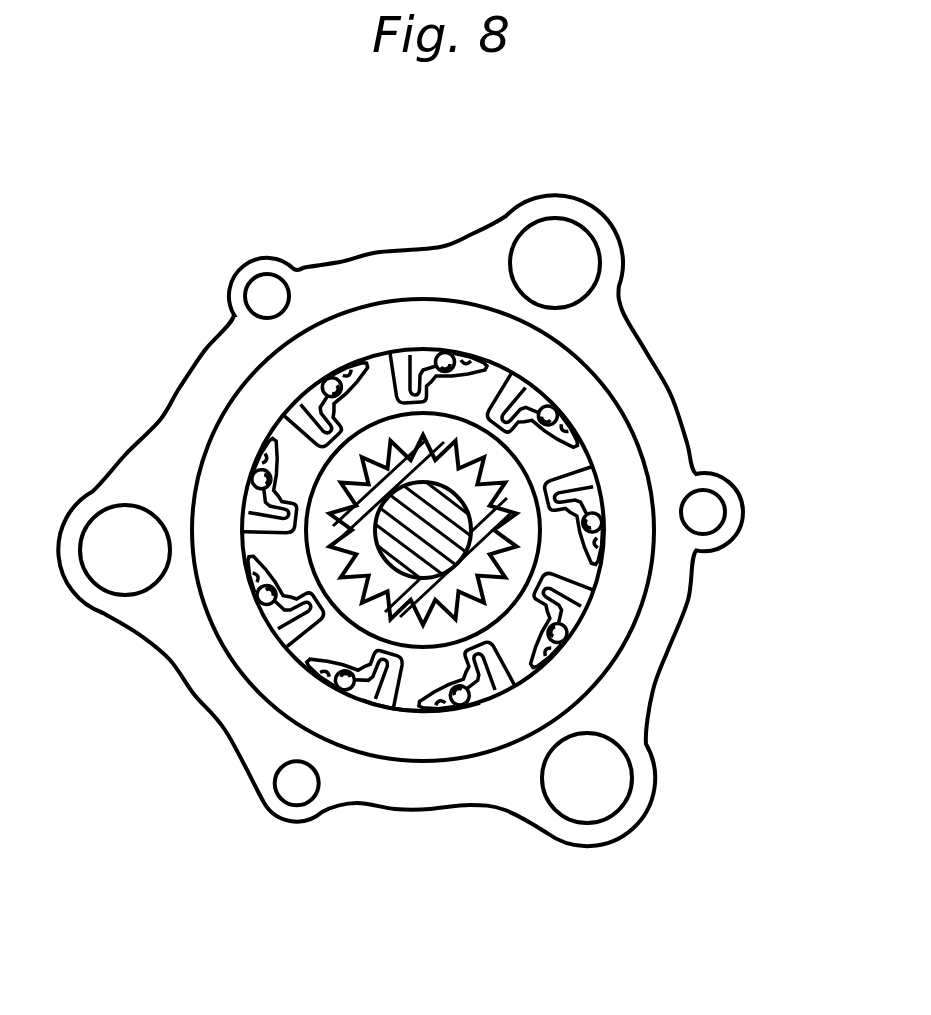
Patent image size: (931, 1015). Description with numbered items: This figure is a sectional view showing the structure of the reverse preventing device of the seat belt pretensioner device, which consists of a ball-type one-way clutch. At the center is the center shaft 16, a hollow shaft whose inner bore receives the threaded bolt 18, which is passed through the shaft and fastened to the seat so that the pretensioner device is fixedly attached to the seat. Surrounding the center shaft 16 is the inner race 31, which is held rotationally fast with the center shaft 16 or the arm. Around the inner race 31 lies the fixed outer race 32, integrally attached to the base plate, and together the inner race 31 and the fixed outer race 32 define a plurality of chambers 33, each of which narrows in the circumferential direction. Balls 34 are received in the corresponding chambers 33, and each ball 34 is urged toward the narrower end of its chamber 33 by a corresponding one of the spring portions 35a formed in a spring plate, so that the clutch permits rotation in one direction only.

The center shaft 16 is at (490, 563).
The threaded bolt 18 is at (446, 515).
The inner race 31 is at (290, 613).
The fixed outer race 32 is at (188, 395).
The chambers 33 is at (467, 360).
The balls 34 is at (443, 357).
The spring portions 35a is at (480, 705).